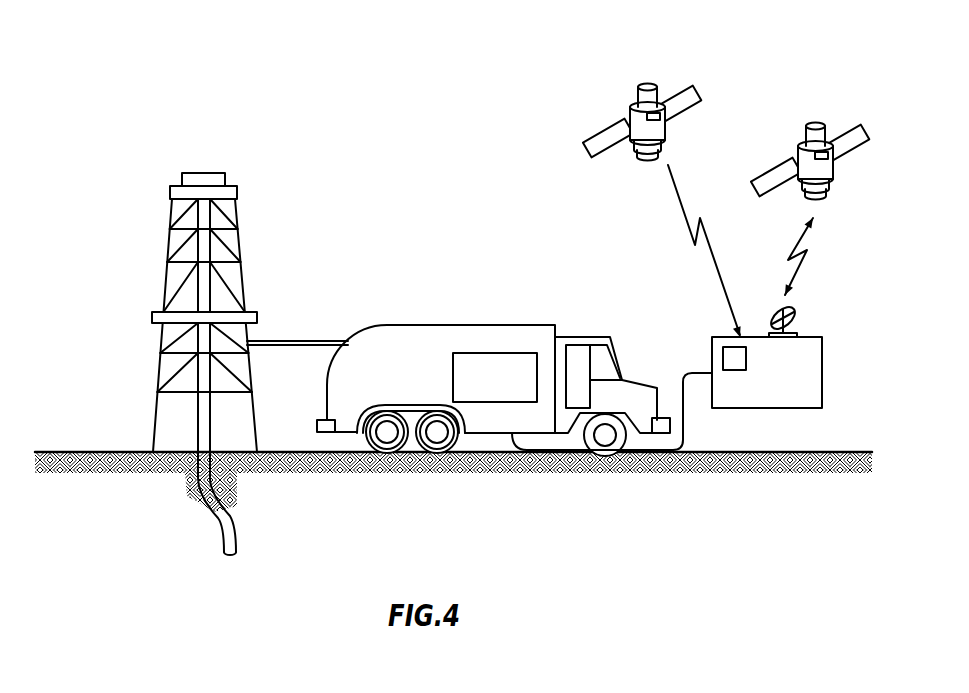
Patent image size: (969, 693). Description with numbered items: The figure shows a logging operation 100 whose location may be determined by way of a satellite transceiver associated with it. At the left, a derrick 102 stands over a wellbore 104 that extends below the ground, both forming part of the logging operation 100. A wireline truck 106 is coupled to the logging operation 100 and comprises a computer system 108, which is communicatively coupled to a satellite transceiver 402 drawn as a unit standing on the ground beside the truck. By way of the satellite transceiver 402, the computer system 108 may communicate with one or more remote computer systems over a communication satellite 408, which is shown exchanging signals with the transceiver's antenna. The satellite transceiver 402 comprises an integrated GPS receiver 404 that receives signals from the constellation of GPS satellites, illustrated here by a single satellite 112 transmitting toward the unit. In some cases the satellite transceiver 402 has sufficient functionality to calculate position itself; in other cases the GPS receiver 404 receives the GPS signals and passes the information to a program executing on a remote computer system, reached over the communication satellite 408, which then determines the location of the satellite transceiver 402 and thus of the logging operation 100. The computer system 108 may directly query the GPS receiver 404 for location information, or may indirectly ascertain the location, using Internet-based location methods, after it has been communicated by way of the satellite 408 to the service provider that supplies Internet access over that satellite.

The logging operation 100 is at (136, 128).
The derrick 102 is at (224, 172).
The wellbore 104 is at (237, 528).
The wireline truck 106 is at (412, 322).
The computer system 108 is at (478, 391).
The satellite 112 is at (633, 97).
The satellite transceiver 402 is at (775, 376).
The GPS receiver 404 is at (745, 368).
The communication satellite 408 is at (813, 125).